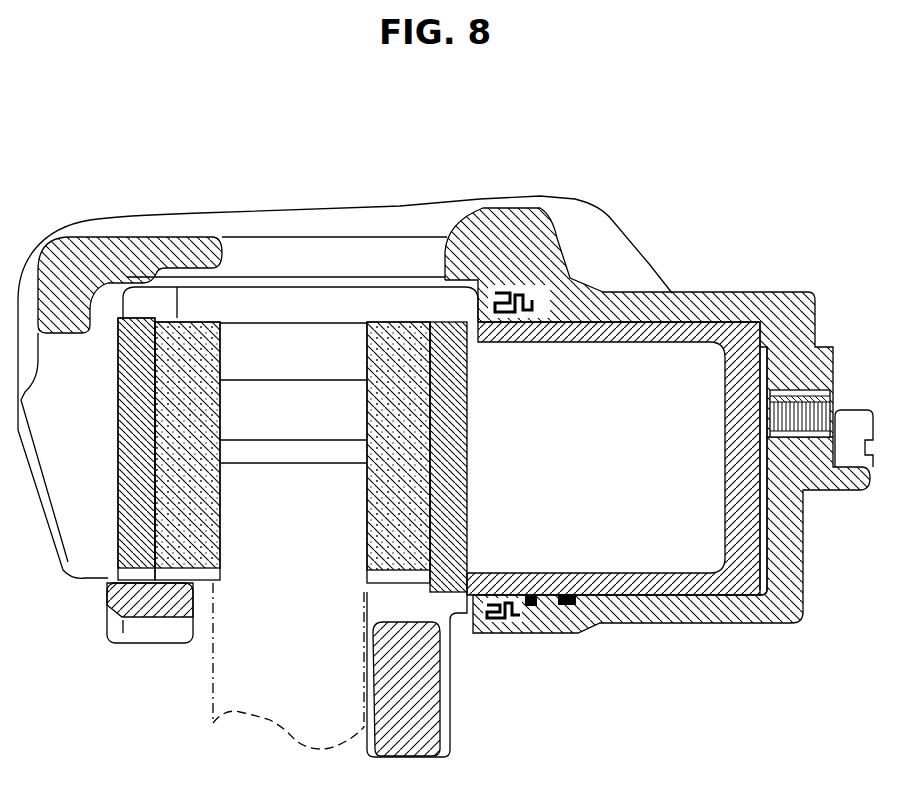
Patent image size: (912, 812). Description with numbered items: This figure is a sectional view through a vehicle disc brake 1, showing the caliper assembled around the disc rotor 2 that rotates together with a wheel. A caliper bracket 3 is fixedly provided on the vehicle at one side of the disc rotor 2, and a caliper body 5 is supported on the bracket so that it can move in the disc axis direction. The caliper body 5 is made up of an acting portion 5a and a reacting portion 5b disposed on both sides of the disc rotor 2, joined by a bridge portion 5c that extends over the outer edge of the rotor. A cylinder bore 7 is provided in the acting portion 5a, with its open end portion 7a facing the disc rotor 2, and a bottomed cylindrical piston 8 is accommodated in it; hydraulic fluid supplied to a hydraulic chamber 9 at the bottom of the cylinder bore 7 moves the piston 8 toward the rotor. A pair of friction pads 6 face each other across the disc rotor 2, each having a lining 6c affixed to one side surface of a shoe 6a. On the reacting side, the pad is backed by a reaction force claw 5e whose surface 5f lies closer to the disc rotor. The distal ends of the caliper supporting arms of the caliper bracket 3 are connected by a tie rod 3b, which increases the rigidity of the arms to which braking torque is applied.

The vehicle disc brake 1 is at (450, 105).
The disc rotor 2 is at (288, 742).
The caliper bracket 3 is at (458, 703).
The tie rod 3b is at (148, 645).
The caliper body 5 is at (519, 191).
The acting portion 5a is at (708, 300).
The reacting portion 5b is at (58, 250).
The bridge portion 5c is at (318, 225).
The reaction force claw 5e is at (88, 578).
The surface of reaction force claw 5f is at (118, 512).
The friction pad 6 is at (297, 455).
The shoe 6a is at (118, 424).
The lining 6c is at (118, 449).
The cylinder bore 7 is at (641, 622).
The open end portion of cylinder bore 7a is at (466, 651).
The piston 8 is at (613, 343).
The hydraulic chamber 9 is at (770, 519).